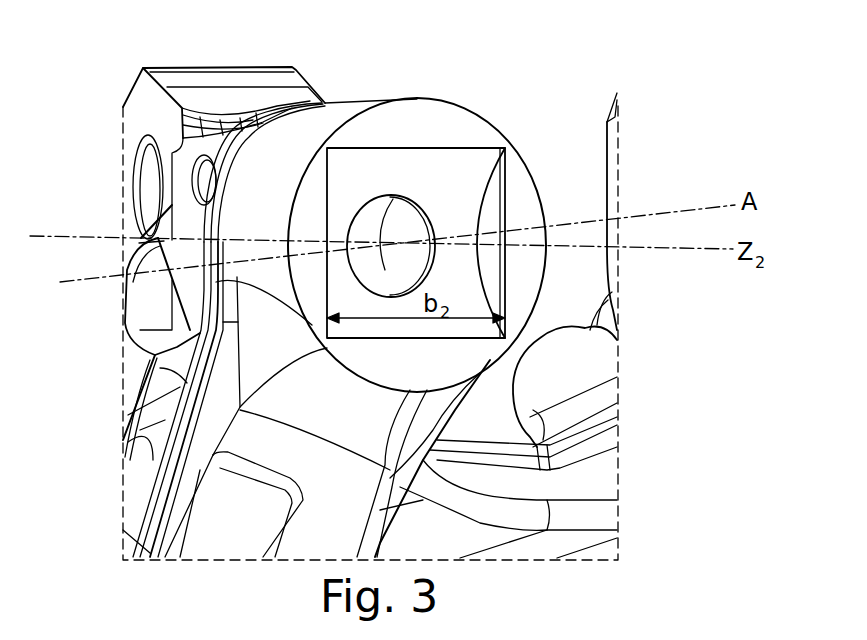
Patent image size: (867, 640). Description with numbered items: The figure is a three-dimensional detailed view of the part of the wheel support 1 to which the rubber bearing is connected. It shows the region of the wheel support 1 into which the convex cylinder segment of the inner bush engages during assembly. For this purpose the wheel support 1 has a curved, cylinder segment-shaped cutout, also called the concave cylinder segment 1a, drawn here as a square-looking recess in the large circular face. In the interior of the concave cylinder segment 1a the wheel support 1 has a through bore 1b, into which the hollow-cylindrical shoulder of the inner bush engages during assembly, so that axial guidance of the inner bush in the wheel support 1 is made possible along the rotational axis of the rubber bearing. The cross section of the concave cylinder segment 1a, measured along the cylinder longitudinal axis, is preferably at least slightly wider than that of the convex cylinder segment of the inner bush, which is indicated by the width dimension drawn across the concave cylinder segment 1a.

The wheel support 1 is at (222, 97).
The concave cylinder segment 1a is at (467, 180).
The through bore 1b is at (384, 236).